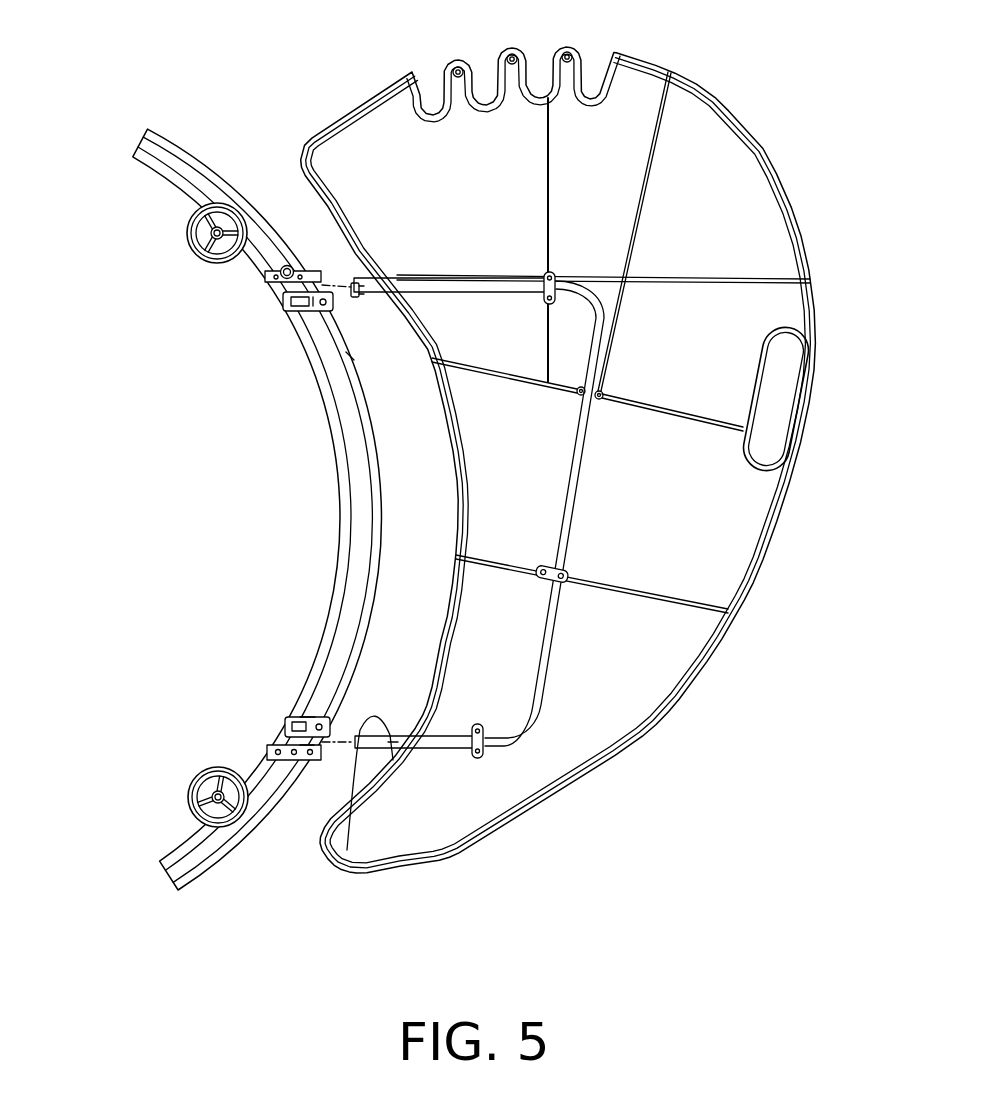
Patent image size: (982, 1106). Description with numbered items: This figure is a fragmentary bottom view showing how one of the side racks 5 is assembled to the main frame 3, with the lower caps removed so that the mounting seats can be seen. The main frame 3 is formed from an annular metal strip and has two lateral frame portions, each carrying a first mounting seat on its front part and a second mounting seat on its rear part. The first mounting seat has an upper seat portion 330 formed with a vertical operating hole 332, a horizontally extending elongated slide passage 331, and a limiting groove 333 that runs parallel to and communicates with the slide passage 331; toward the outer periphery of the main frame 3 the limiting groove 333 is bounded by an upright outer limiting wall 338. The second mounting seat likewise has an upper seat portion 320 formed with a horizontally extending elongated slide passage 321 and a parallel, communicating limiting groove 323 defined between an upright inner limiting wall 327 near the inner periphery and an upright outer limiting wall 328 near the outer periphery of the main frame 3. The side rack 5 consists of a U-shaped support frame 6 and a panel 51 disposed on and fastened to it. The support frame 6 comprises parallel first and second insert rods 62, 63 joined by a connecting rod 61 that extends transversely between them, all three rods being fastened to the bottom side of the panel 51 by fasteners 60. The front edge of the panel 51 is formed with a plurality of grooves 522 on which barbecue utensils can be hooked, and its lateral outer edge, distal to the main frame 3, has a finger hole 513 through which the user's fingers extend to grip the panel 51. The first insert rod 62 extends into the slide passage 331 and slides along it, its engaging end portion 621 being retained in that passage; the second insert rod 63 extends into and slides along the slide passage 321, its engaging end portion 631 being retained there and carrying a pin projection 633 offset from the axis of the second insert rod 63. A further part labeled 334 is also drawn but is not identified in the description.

The main frame 3 is at (190, 860).
The side rack 5 is at (748, 98).
The panel 51 is at (710, 538).
The finger hole 513 is at (778, 406).
The grooves 522 is at (483, 72).
The support frame 6 is at (535, 677).
The fasteners 60 is at (555, 280).
The connecting rod 61 is at (600, 352).
The first insert rod 62 is at (428, 290).
The engaging end portion 621 is at (360, 290).
The second insert rod 63 is at (418, 742).
The engaging end portion 631 is at (347, 850).
The pin projection 633 is at (393, 760).
The upper seat portion 320 is at (283, 740).
The slide passage 321 is at (307, 748).
The limiting groove 323 is at (315, 735).
The inner limiting wall 327 is at (287, 735).
The outer limiting wall 328 is at (307, 715).
The upper seat portion 330 is at (270, 282).
The slide passage 331 is at (280, 292).
The vertical operating hole 332 is at (287, 266).
The limiting groove 333 is at (320, 305).
The clamp slot 334 is at (285, 302).
The outer limiting wall 338 is at (350, 357).